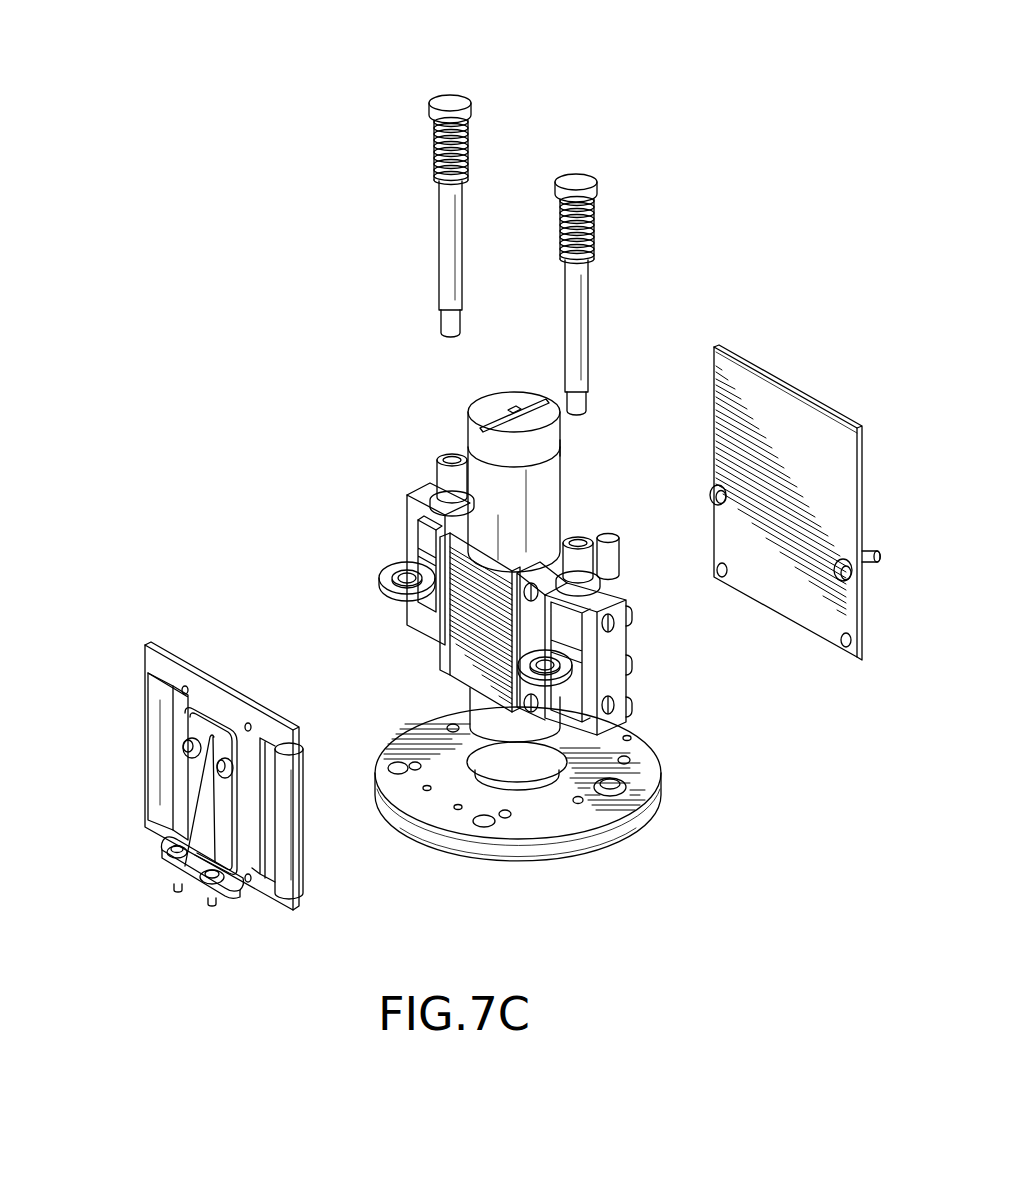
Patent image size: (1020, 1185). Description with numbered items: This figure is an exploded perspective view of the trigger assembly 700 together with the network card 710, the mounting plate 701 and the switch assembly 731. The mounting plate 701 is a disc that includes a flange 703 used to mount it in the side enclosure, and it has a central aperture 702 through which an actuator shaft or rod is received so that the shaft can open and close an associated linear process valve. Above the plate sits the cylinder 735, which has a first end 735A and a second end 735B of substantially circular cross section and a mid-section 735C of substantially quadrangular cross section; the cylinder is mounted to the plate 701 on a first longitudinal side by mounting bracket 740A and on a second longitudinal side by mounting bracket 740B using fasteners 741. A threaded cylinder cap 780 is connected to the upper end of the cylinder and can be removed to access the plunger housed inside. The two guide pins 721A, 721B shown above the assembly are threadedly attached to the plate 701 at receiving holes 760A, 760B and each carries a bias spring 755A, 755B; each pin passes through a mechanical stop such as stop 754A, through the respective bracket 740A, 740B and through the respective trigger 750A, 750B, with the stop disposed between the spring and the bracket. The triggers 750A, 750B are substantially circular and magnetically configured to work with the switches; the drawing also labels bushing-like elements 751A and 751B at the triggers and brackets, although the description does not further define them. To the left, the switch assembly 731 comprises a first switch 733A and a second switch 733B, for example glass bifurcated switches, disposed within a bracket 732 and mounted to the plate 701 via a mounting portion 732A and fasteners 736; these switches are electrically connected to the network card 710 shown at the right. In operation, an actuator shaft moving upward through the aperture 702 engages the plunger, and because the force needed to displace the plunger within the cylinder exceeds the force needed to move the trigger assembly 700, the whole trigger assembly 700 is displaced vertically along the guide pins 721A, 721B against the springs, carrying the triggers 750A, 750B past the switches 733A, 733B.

The trigger assembly 700 is at (326, 334).
The mounting plate 701 is at (662, 797).
The aperture 702 is at (497, 778).
The flange 703 is at (630, 838).
The network card 710 is at (846, 422).
The guide pin 721A is at (577, 178).
The guide pin 721B is at (456, 97).
The switch assembly 731 is at (124, 720).
The bracket 732 is at (215, 698).
The mounting portion 732A is at (188, 885).
The first switch 733A is at (302, 840).
The second switch 733B is at (150, 775).
The cylinder 735 is at (583, 499).
The first end 735A is at (468, 704).
The second end 735B is at (561, 448).
The mid-section 735C is at (440, 640).
The fasteners 736 is at (170, 845).
The mounting bracket 740A is at (608, 664).
The mounting bracket 740B is at (406, 500).
The fasteners 741 is at (536, 591).
The trigger 750A is at (560, 672).
The trigger 750B is at (384, 598).
The bushing 751A is at (553, 662).
The bushing 751B is at (442, 462).
The mechanical stop 754A is at (580, 540).
The bias spring 755A is at (596, 220).
The bias spring 755B is at (434, 148).
The receiving hole 760A is at (578, 803).
The receiving hole 760B is at (452, 728).
The threaded cylinder cap 780 is at (505, 400).